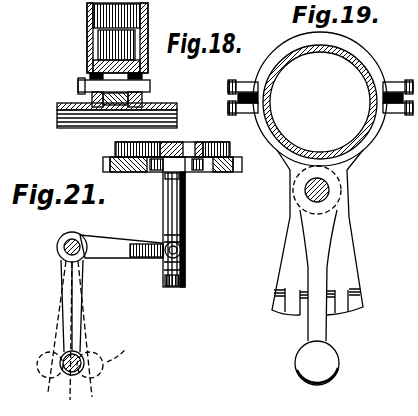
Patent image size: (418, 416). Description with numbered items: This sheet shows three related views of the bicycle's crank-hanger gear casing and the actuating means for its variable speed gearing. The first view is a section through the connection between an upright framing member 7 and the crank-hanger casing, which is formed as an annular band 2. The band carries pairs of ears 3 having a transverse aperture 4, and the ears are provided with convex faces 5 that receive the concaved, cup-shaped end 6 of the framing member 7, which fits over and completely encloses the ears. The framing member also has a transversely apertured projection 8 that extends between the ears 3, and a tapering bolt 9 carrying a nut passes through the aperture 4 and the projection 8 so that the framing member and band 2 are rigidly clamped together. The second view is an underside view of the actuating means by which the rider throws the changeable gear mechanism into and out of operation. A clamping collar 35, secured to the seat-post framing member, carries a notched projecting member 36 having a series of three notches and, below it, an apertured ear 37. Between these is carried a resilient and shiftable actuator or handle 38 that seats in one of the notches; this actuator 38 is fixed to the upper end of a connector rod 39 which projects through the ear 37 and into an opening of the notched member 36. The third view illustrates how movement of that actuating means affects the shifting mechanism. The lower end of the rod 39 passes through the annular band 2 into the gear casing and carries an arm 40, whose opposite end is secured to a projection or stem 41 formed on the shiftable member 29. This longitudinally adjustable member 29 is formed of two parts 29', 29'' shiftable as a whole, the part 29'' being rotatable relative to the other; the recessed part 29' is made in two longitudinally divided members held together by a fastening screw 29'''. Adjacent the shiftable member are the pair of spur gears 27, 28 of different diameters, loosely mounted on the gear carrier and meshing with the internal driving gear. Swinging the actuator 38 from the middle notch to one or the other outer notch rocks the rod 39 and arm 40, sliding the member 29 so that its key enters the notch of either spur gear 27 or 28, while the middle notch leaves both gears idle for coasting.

In FIG. 18, the upright framing member 7 is at (87, 21).
In FIG. 19, the upright framing member 7 is at (367, 145).
In FIG. 18, the convex face 5 is at (88, 65).
In FIG. 18, the cup-shaped end 6 is at (148, 70).
In FIG. 18, the ear 3 is at (148, 76).
In FIG. 18, the tapering bolt 9 is at (150, 86).
In FIG. 18, the transverse aperture 4 is at (90, 92).
In FIG. 18, the transversely apertured projection 8 is at (113, 98).
In FIG. 18, the annular band 2 is at (126, 115).
In FIG. 21, the spur gear 27 is at (215, 148).
In FIG. 21, the spur gear 28 is at (234, 172).
In FIG. 21, the shiftable member 29 is at (158, 222).
In FIG. 21, the recessed part of shiftable member 29' is at (194, 238).
In FIG. 21, the rotatable part of shiftable member 29'' is at (154, 183).
In FIG. 21, the fastening screw 29''' is at (151, 286).
In FIG. 21, the stem 41 is at (181, 250).
In FIG. 21, the arm 40 is at (115, 255).
In FIG. 21, the connector rod 39 is at (63, 248).
In FIG. 19, the connector rod 39 is at (308, 191).
In FIG. 21, the actuator 38 is at (68, 329).
In FIG. 19, the actuator 38 is at (322, 325).
In FIG. 19, the clamping collar 35 is at (372, 62).
In FIG. 19, the apertured ear 37 is at (335, 192).
In FIG. 19, the notched projecting member 36 is at (350, 248).